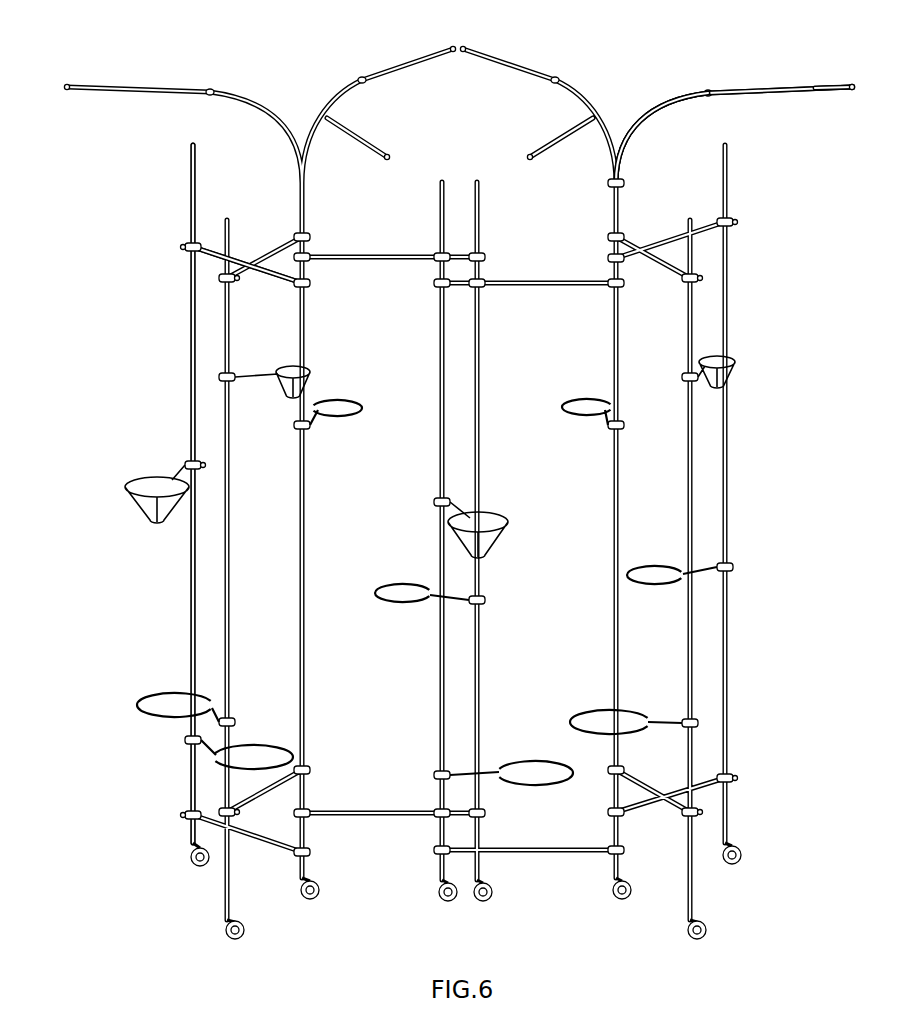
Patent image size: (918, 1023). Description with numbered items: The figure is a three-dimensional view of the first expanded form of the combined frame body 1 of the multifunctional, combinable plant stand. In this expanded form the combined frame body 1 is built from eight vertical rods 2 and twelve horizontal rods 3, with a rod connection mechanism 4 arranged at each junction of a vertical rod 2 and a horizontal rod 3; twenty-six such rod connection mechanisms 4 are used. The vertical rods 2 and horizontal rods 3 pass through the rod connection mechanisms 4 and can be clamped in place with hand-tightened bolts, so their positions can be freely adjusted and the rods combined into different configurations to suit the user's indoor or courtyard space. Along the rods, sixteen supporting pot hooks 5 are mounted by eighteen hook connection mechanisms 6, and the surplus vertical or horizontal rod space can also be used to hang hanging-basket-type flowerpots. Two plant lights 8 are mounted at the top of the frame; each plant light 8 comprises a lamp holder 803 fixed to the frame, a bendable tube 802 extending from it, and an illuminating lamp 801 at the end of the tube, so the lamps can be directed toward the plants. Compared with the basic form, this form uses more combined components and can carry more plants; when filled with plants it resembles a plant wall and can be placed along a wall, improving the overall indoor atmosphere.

The combined frame body 1 is at (190, 823).
The vertical rod 2 is at (193, 262).
The horizontal rod 3 is at (213, 255).
The rod connection mechanism 4 is at (193, 247).
The supporting pot hook 5 is at (175, 475).
The hook connection mechanism 6 is at (193, 465).
The plant light 8 is at (753, 90).
The illuminating lamp 801 is at (851, 95).
The bendable tube 802 is at (660, 100).
The lamp holder 803 is at (625, 183).